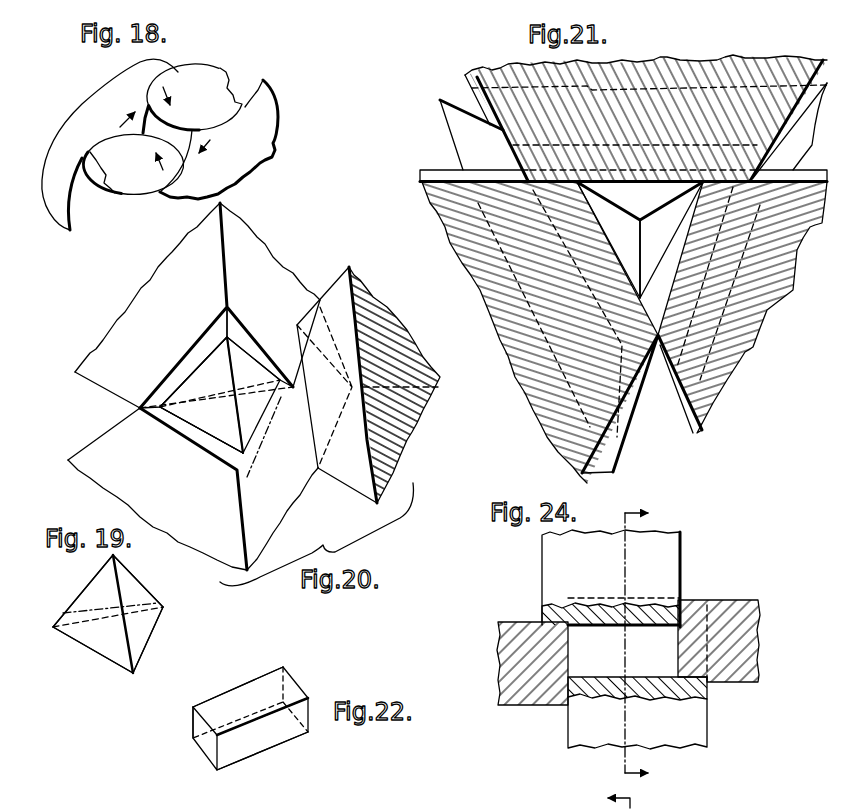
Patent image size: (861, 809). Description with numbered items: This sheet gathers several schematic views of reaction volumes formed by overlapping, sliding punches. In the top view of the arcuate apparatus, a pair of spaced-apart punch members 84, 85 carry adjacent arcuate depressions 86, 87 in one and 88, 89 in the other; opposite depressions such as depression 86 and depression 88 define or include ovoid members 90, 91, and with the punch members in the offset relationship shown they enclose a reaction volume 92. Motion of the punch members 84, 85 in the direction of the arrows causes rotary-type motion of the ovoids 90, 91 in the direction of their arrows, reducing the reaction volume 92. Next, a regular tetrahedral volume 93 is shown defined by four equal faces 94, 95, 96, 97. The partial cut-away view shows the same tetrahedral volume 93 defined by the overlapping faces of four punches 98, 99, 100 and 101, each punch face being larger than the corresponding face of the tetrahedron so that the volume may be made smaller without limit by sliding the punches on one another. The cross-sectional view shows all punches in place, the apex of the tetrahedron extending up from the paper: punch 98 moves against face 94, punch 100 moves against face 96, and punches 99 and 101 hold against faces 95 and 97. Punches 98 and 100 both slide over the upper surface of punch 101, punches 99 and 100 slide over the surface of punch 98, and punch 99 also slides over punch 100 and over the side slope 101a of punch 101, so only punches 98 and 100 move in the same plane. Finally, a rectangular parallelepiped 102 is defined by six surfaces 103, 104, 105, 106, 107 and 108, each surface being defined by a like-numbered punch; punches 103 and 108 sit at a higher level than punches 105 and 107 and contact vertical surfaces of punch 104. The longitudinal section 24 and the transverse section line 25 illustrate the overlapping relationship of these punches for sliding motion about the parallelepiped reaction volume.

In FIG. 18, the punch member 84 is at (233, 148).
In FIG. 18, the punch member 85 is at (118, 83).
In FIG. 18, the arcuate depression 86 is at (247, 93).
In FIG. 18, the arcuate depression 87 is at (163, 173).
In FIG. 18, the arcuate depression 88 is at (163, 82).
In FIG. 18, the arcuate depression 89 is at (115, 135).
In FIG. 18, the ovoid member 90 is at (125, 170).
In FIG. 18, the ovoid member 91 is at (212, 77).
In FIG. 18, the reaction volume 92 is at (151, 142).
In FIG. 20, the tetrahedral volume 93 is at (184, 380).
In FIG. 19, the tetrahedral volume 93 is at (62, 641).
In FIG. 21, the tetrahedral volume 93 is at (601, 178).
In FIG. 20, the face 94 is at (203, 357).
In FIG. 19, the face 94 is at (92, 583).
In FIG. 21, the face 94 is at (657, 193).
In FIG. 20, the face 95 is at (245, 370).
In FIG. 19, the face 95 is at (135, 588).
In FIG. 21, the face 95 is at (657, 235).
In FIG. 20, the face 96 is at (222, 417).
In FIG. 19, the face 96 is at (113, 637).
In FIG. 21, the face 96 is at (627, 240).
In FIG. 20, the face 97 is at (193, 428).
In FIG. 19, the face 97 is at (90, 650).
In FIG. 20, the punch 98 is at (122, 323).
In FIG. 21, the punch 98 is at (650, 68).
In FIG. 20, the punch 99 is at (335, 283).
In FIG. 21, the punch 99 is at (747, 320).
In FIG. 21, the punch 100 is at (482, 275).
In FIG. 20, the punch 101 is at (90, 447).
In FIG. 21, the punch 101 is at (462, 135).
In FIG. 20, the side slope 101a is at (278, 485).
In FIG. 22, the rectangular parallelepiped 102 is at (205, 766).
In FIG. 22, the surface 103 is at (243, 703).
In FIG. 24, the surface 103 is at (662, 660).
In FIG. 22, the surface 104 is at (217, 710).
In FIG. 24, the surface 104 is at (660, 578).
In FIG. 22, the surface 105 is at (247, 740).
In FIG. 22, the surface 106 is at (265, 733).
In FIG. 24, the surface 106 is at (583, 727).
In FIG. 22, the surface 107 is at (207, 740).
In FIG. 24, the surface 107 is at (522, 662).
In FIG. 22, the surface 108 is at (293, 702).
In FIG. 24, the surface 108 is at (727, 632).
In FIG. 24, the longitudinal cross sectional view 24 is at (632, 799).
In FIG. 24, the transverse cross sectional view 25 is at (623, 646).